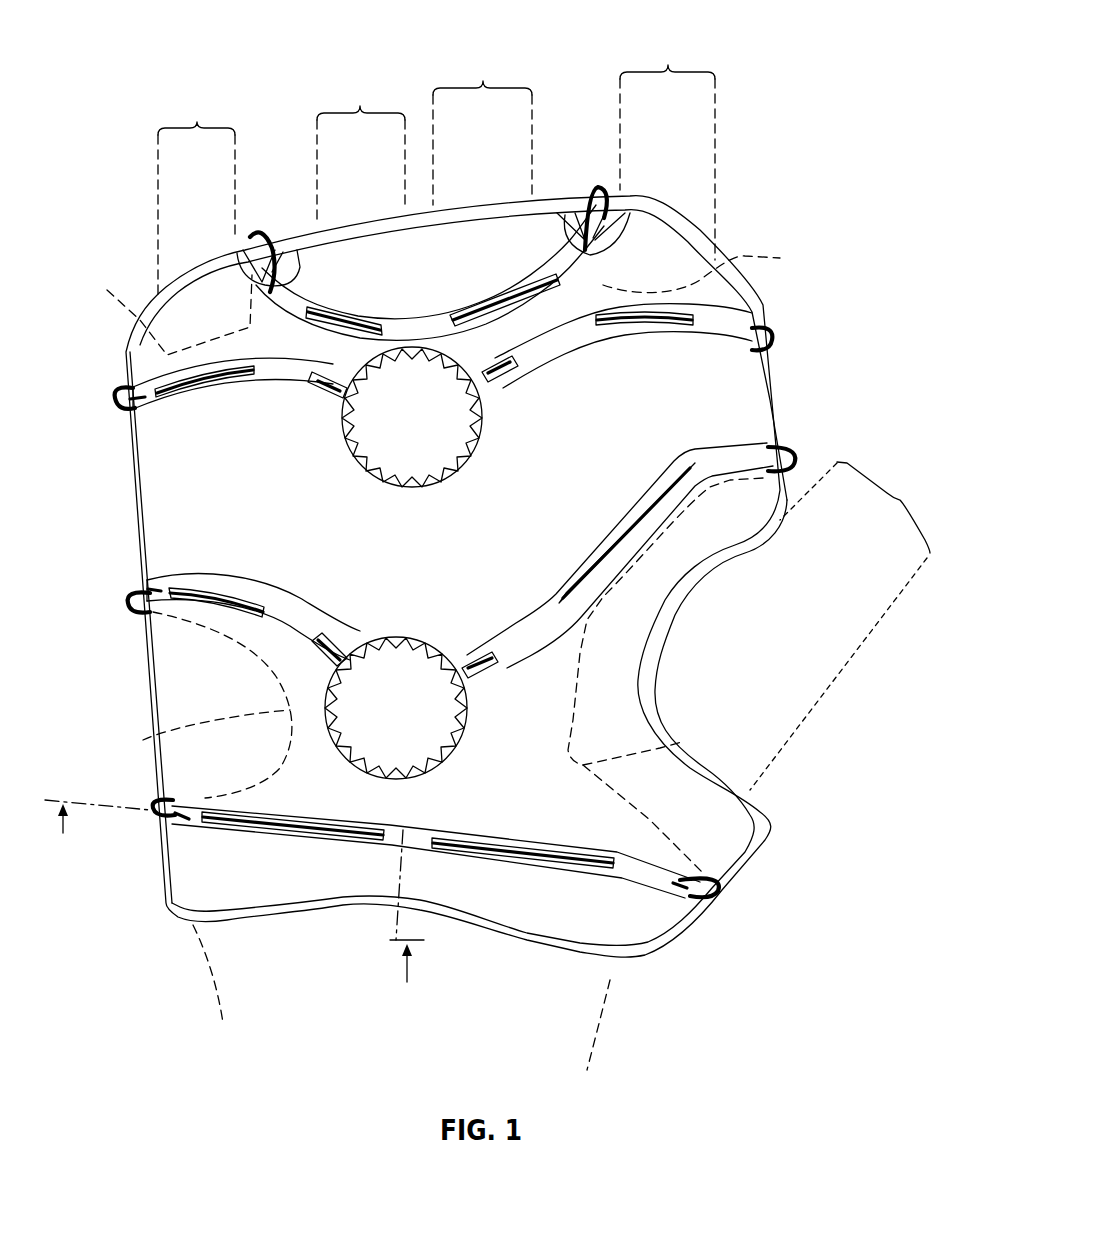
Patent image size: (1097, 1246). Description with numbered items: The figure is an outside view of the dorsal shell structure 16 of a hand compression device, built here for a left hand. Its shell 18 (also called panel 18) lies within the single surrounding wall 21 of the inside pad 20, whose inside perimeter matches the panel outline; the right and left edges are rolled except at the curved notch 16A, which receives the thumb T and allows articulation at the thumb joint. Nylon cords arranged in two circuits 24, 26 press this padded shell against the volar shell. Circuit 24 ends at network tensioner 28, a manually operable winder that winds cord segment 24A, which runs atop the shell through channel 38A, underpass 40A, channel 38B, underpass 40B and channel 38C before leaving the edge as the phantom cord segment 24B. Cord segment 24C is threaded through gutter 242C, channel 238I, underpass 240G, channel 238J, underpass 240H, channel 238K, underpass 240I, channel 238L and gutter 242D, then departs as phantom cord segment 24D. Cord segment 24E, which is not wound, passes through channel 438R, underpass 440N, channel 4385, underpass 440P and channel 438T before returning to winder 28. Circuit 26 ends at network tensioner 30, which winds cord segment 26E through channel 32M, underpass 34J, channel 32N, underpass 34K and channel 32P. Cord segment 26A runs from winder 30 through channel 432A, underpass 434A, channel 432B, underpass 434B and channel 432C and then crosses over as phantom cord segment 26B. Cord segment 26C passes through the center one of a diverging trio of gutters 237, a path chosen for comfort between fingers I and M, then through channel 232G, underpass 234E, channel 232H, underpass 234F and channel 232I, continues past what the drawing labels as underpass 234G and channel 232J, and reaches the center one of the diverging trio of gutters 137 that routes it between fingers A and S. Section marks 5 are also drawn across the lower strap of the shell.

The dorsal shell structure 16 is at (340, 902).
The curved notch 16A is at (664, 713).
The shell 18 is at (162, 687).
The inside pad 20 is at (570, 952).
The surrounding wall 21 is at (662, 617).
The circuit 24 is at (795, 458).
The cord segment 24A is at (217, 607).
The cord segment 24B is at (143, 740).
The cord segment 24C is at (195, 922).
The cord segment 24D is at (107, 290).
The cord segment 24E is at (640, 512).
The circuit 26 is at (596, 190).
The cord segment 26A is at (650, 340).
The cord segment 26B is at (719, 263).
The cord segment 26C is at (490, 313).
The cord segment 26E is at (213, 380).
The network tensioner 28 is at (352, 740).
The network tensioner 30 is at (365, 460).
The channel 32M is at (135, 405).
The channel 32N is at (225, 392).
The channel 32P is at (312, 390).
The underpass 34J is at (153, 397).
The underpass 34K is at (297, 368).
The channel 38A is at (328, 635).
The channel 38B is at (245, 607).
The channel 38C is at (160, 580).
The underpass 40A is at (312, 622).
The underpass 40B is at (205, 580).
The diverging trio of gutters 137 is at (226, 267).
The channel 232G is at (620, 221).
The channel 232H is at (577, 300).
The channel 232I is at (345, 318).
The strap hook 232J is at (290, 262).
The underpass 234E is at (570, 262).
The underpass 234F is at (445, 322).
The stitching 234G is at (298, 290).
The diverging trio of gutters 237 is at (593, 247).
The channel 238I is at (178, 832).
The channel 238J is at (215, 830).
The channel 238K is at (560, 870).
The channel 238L is at (680, 897).
The underpass 240G is at (205, 798).
The underpass 240H is at (425, 833).
The underpass 240I is at (630, 873).
The gutter 242C is at (163, 797).
The gutter 242D is at (715, 882).
The channel 432A is at (508, 382).
The channel 432B is at (608, 325).
The channel 432C is at (762, 360).
The underpass 434A is at (545, 358).
The underpass 434B is at (712, 333).
The channel 438R is at (760, 440).
The channel 438T is at (482, 678).
The channel 4385 is at (672, 480).
The underpass 440N is at (718, 452).
The underpass 440P is at (545, 612).
The section line 5 is at (234, 908).
The finger S is at (197, 122).
The finger A is at (360, 104).
The finger M is at (483, 75).
The finger I is at (668, 60).
The thumb T is at (900, 497).